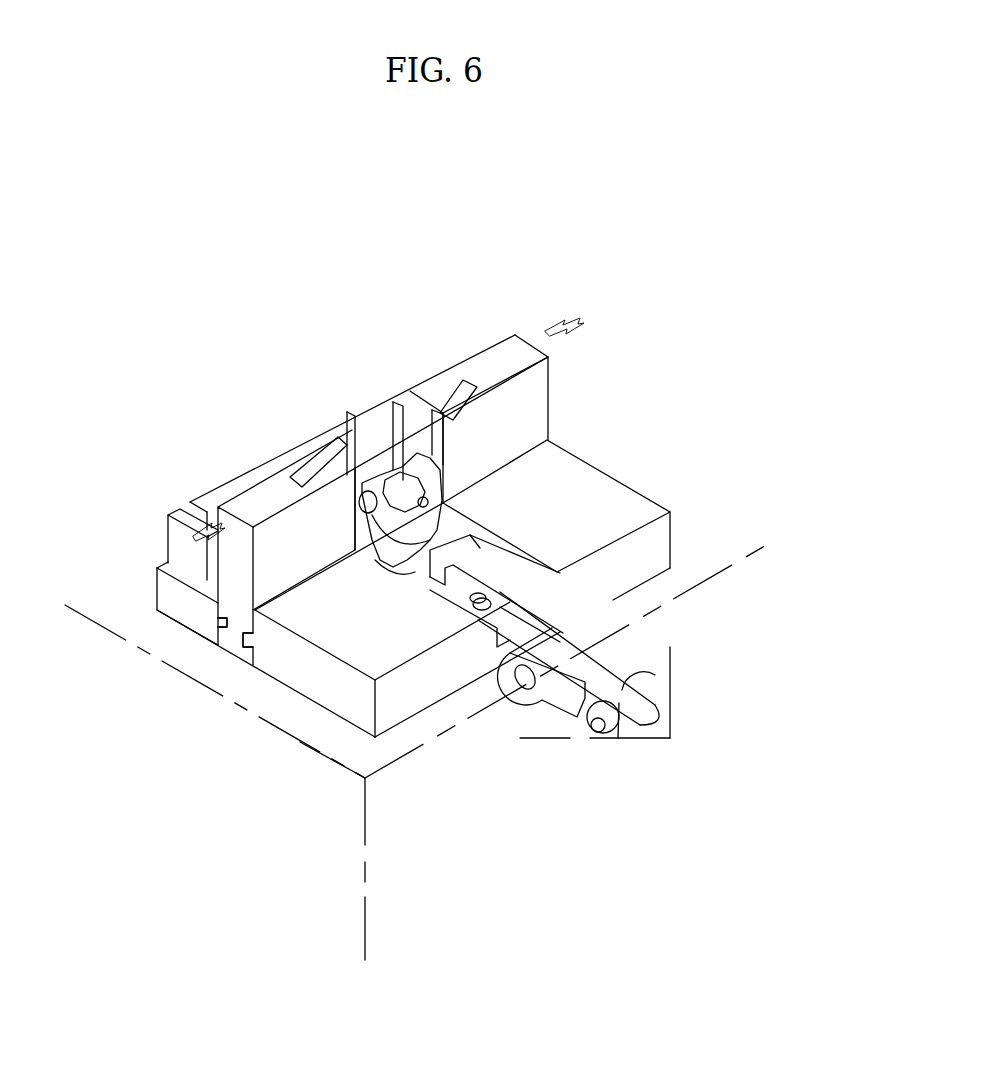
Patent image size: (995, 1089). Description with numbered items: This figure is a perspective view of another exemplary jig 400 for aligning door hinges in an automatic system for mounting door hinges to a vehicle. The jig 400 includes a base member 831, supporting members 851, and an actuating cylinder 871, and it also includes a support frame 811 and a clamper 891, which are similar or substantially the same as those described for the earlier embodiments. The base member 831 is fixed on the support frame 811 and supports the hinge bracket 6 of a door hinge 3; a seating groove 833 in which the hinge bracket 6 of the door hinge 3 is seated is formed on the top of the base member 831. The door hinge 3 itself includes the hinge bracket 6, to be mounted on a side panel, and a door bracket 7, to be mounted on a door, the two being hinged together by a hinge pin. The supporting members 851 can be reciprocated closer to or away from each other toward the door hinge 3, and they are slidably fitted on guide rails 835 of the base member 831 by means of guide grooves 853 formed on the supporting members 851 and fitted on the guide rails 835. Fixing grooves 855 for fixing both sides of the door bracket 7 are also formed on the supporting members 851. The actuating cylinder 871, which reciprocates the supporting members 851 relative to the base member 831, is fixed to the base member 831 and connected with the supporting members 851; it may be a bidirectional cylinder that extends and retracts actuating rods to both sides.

The jig 400 is at (387, 203).
The door hinge 3 is at (378, 570).
The hinge bracket 6 is at (453, 600).
The door bracket 7 is at (378, 478).
The support frame 811 is at (300, 748).
The base member 831 is at (577, 478).
The seating groove 833 is at (515, 592).
The guide rails 835 is at (250, 645).
The supporting members 851 is at (253, 507).
The guide grooves 853 is at (225, 622).
The fixing grooves 855 is at (308, 472).
The actuating cylinder 871 is at (295, 432).
The clamper 891 is at (555, 712).